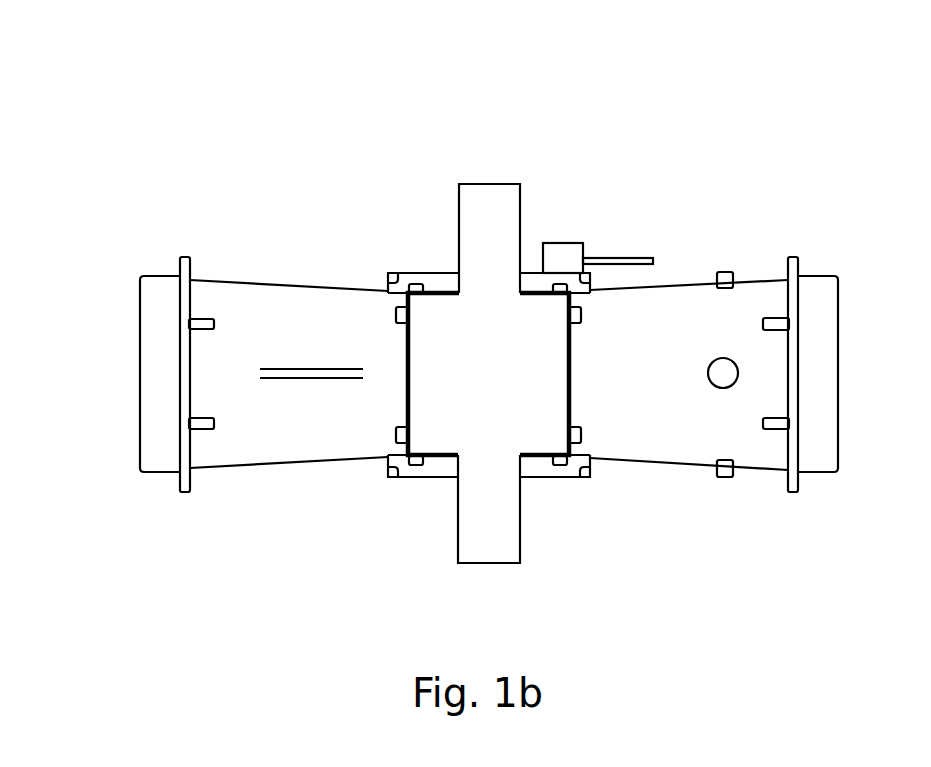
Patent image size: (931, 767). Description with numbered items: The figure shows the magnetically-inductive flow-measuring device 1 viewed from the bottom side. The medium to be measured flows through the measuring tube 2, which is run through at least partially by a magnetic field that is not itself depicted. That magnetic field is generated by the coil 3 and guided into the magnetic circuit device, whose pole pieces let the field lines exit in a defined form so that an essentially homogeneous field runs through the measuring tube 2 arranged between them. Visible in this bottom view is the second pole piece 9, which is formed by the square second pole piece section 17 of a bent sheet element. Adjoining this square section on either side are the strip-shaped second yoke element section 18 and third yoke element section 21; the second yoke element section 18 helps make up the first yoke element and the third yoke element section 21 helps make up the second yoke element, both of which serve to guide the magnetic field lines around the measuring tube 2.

The magnetically-inductive flow-measuring device 1 is at (110, 110).
The measuring tube 2 is at (673, 447).
The coil 3 is at (443, 278).
The second pole piece 9 is at (535, 325).
The second pole piece section 17 is at (449, 425).
The second yoke element section 18 is at (507, 202).
The third yoke element section 21 is at (498, 552).